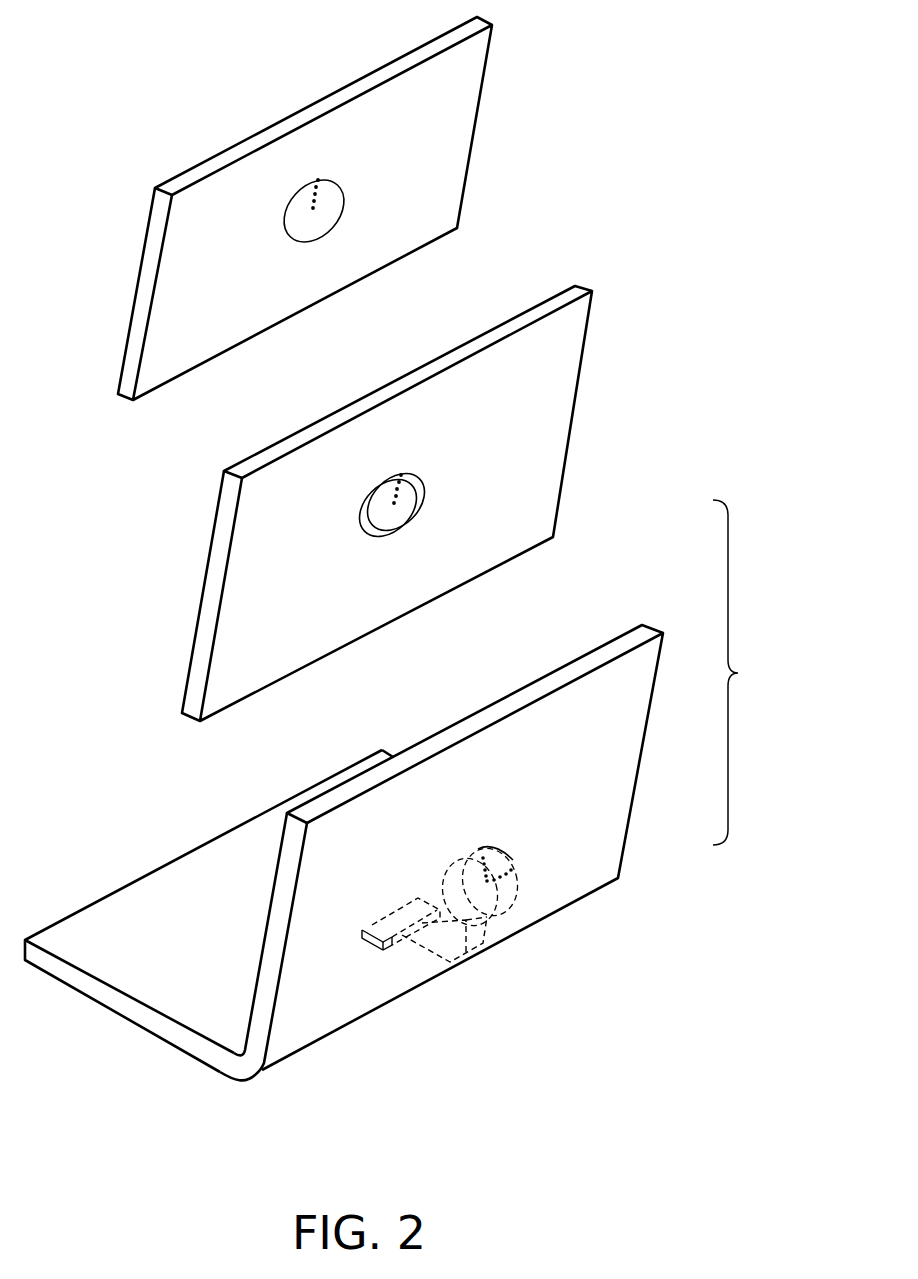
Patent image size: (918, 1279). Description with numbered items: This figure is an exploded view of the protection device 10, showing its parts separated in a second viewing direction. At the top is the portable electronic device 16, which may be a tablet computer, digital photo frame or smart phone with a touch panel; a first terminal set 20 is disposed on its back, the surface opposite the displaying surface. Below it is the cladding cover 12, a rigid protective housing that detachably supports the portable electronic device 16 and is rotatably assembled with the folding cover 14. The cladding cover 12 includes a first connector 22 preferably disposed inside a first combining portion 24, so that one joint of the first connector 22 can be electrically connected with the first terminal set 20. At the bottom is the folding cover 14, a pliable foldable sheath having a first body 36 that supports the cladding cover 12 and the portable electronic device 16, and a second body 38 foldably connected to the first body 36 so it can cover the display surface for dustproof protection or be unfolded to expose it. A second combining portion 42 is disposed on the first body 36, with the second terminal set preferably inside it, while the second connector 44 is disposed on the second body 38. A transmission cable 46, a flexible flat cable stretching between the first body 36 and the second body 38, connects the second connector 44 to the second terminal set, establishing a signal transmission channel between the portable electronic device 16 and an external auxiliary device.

The protection device 10 is at (740, 673).
The cladding cover 12 is at (540, 508).
The folding cover 14 is at (540, 798).
The portable electronic device 16 is at (257, 195).
The first terminal set 20 is at (332, 202).
The first connector 22 is at (370, 504).
The first combining portion 24 is at (416, 501).
The first body 36 is at (280, 915).
The second body 38 is at (122, 1008).
The second combining portion 42 is at (500, 888).
The second connector 44 is at (380, 935).
The transmission cable 46 is at (475, 957).